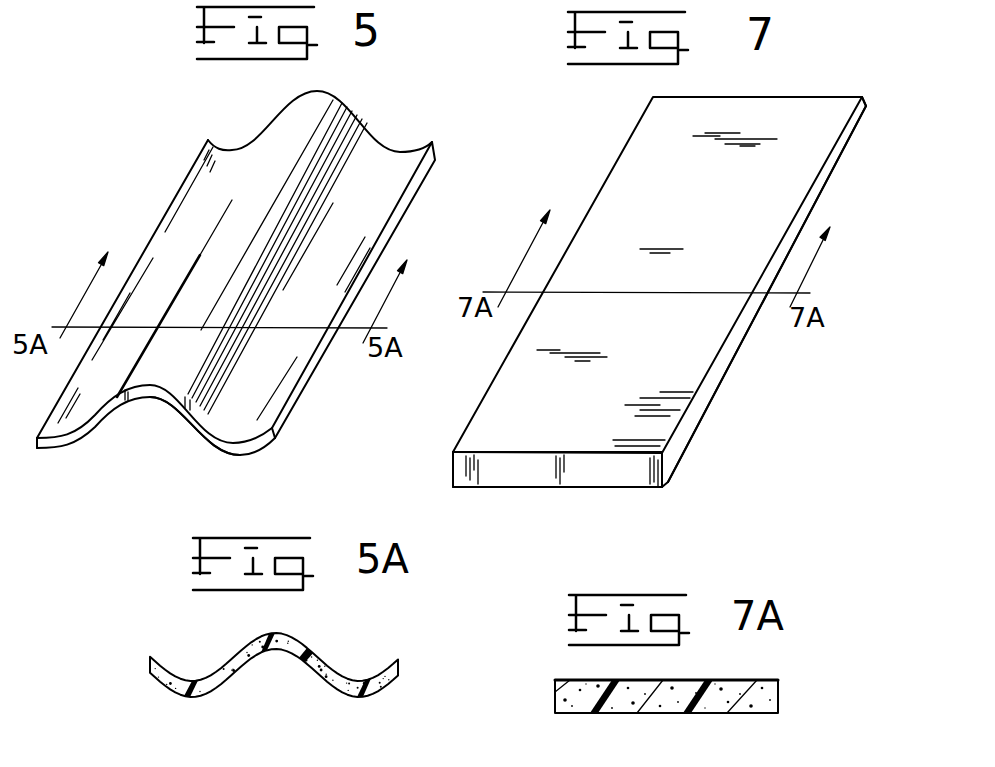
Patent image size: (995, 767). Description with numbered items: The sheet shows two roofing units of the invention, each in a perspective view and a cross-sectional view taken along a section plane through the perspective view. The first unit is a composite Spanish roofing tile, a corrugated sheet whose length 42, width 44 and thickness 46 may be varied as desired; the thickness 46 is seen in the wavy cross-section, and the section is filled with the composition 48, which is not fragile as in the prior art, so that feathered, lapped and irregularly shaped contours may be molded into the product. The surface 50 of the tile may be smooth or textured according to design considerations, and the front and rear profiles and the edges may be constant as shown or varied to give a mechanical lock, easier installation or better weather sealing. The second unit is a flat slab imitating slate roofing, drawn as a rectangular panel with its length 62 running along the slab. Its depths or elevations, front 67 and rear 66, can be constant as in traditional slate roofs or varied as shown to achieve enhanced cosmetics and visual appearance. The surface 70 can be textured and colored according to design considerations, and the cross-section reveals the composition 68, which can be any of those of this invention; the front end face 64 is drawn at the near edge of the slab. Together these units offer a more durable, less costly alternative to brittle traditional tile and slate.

In FIG. 5, the length 42 is at (292, 399).
In FIG. 5, the width 44 is at (200, 425).
In FIG. 5, the surface 50 is at (327, 230).
In FIG. 5A, the thickness 46 is at (400, 663).
In FIG. 5A, the composition 48 is at (312, 670).
In FIG. 7, the length 62 is at (730, 349).
In FIG. 7, the end face of slab 64 is at (592, 468).
In FIG. 7, the rear depth or elevation 66 is at (862, 106).
In FIG. 7, the front depth or elevation 67 is at (672, 472).
In FIG. 7A, the front depth or elevation 67 is at (779, 695).
In FIG. 7, the surface 70 is at (643, 162).
In FIG. 7A, the composition 68 is at (657, 703).